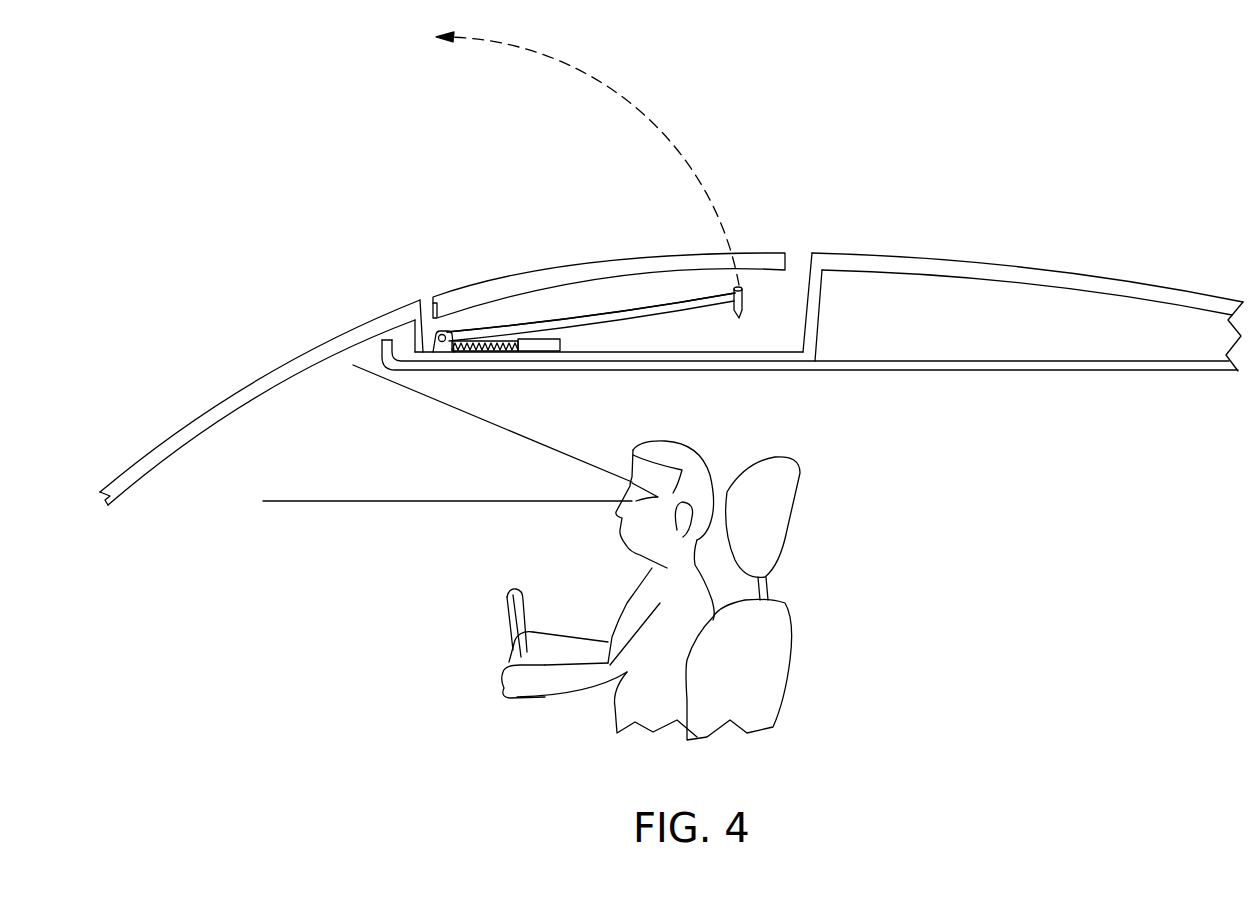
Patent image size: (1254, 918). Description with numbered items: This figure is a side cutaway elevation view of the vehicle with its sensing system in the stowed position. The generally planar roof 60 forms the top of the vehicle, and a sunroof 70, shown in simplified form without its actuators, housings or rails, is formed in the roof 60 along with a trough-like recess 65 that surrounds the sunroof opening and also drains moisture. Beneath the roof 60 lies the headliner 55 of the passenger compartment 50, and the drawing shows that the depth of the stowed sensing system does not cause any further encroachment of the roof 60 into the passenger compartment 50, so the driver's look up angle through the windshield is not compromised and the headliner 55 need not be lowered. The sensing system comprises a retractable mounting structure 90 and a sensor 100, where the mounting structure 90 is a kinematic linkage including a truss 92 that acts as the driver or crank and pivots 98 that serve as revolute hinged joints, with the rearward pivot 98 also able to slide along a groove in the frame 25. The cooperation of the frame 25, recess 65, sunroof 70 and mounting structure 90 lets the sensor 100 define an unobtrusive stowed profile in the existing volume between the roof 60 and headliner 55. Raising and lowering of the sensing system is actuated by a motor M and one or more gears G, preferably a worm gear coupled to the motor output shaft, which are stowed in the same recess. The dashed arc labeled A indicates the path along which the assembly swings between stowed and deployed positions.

The frame 25 is at (727, 355).
The passenger compartment 50 is at (302, 461).
The headliner 55 is at (988, 368).
The roof 60 is at (1002, 277).
The recess 65 is at (815, 288).
The sunroof 70 is at (530, 272).
The retractable mounting structure 90 is at (603, 300).
The truss 92 is at (660, 304).
The pivot 98 is at (443, 333).
The sensor 100 is at (745, 300).
The gear G is at (488, 351).
The motor M is at (556, 342).
The rotation direction A is at (606, 84).